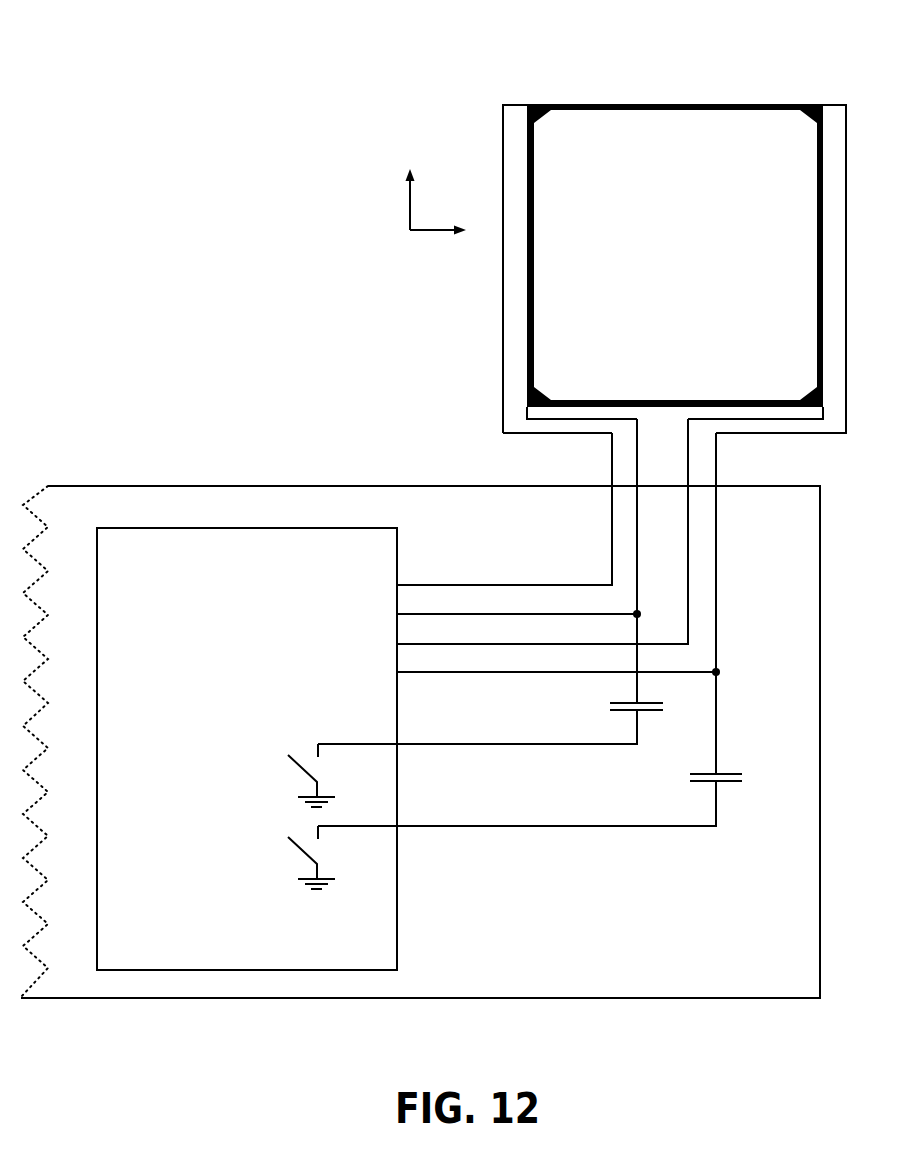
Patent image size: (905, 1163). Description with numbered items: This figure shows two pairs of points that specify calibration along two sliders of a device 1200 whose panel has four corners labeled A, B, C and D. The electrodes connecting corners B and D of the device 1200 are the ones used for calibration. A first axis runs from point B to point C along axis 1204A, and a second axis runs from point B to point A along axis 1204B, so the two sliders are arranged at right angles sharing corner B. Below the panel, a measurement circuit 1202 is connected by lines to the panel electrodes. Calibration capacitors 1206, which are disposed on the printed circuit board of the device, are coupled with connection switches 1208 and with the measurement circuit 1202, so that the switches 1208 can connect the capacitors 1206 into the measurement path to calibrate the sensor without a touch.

The device 1200 is at (448, 78).
The measurement circuit 1202 is at (305, 528).
The axis 1204A is at (381, 199).
The axis 1204B is at (439, 248).
The calibration capacitors 1206 is at (638, 712).
The connection switches 1208 is at (308, 772).